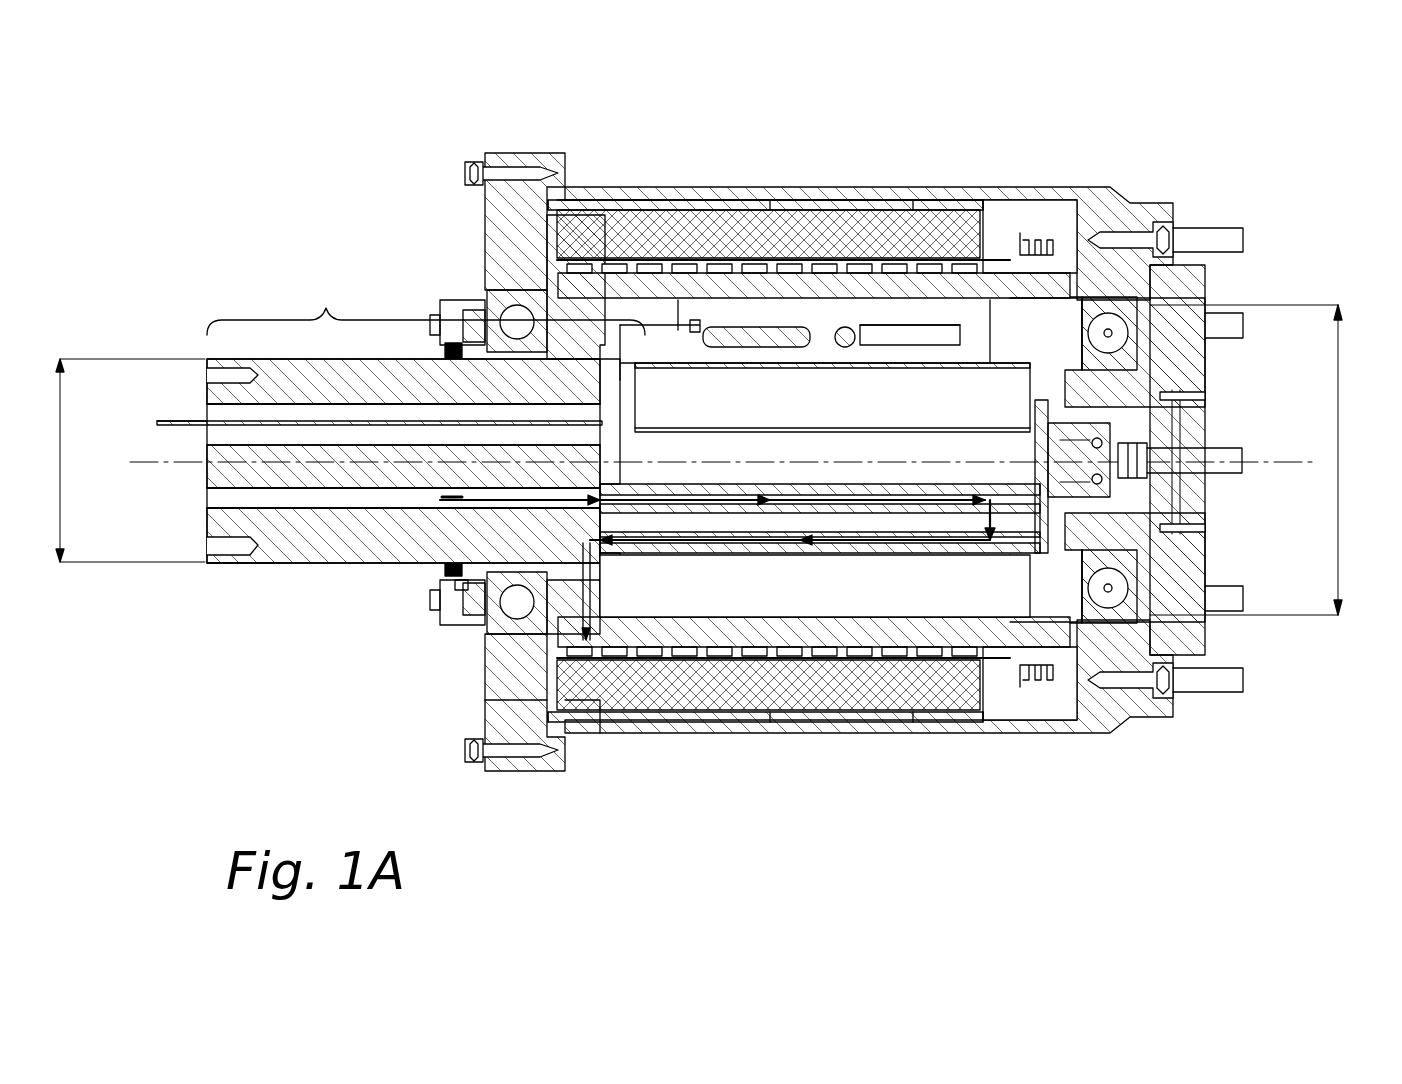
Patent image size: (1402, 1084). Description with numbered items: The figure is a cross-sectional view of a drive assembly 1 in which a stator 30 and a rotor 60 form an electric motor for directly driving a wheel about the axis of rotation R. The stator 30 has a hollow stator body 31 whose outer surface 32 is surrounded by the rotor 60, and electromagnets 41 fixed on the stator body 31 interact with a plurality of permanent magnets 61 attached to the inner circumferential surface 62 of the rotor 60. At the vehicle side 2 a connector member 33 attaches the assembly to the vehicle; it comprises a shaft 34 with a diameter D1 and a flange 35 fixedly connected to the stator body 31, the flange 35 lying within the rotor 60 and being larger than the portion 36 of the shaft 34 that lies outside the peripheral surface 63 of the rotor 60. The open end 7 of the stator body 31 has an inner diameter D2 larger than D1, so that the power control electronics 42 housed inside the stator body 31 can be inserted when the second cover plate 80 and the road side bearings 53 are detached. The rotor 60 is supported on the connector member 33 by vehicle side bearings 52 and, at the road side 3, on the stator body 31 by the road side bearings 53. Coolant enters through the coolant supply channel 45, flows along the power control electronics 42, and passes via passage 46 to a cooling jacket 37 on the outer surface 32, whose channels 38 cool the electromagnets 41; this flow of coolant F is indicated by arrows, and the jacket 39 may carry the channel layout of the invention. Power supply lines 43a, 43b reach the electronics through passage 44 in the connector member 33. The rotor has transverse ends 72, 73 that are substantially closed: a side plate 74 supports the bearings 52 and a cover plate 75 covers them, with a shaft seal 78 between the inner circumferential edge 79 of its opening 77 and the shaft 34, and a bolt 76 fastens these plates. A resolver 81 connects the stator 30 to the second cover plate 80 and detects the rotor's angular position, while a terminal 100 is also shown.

The drive assembly 1 is at (250, 275).
The vehicle side 2 is at (175, 408).
The road side 3 is at (1215, 405).
The open end 7 is at (1142, 600).
The stator 30 is at (605, 700).
The hollow stator body 31 is at (975, 630).
The outer surface 32 is at (858, 722).
The connector member 33 is at (295, 580).
The shaft 34 is at (272, 565).
The flange 35 is at (585, 338).
The portion of the shaft 36 is at (322, 312).
The cooling jacket 37 is at (835, 262).
The channels 38 is at (688, 655).
The jacket 39 is at (790, 612).
The electromagnets 41 is at (878, 225).
The power control electronics 42 is at (672, 385).
The power supply line 43a is at (780, 330).
The power supply line 43b is at (915, 385).
The passage 44 is at (280, 415).
The coolant supply channel 45 is at (215, 499).
The passage 46 is at (625, 690).
The vehicle side bearings 52 is at (515, 320).
The road side bearings 53 is at (1112, 333).
The rotor 60 is at (1135, 185).
The permanent magnets 61 is at (612, 205).
The inner circumferential surface 62 is at (670, 200).
The peripheral surface 63 is at (740, 200).
The transverse end 72 is at (432, 260).
The transverse end 73 is at (1180, 228).
The side plate 74 is at (500, 212).
The cover plate 75 is at (480, 712).
The flange bolt 76 is at (505, 640).
The opening 77 is at (472, 602).
The shaft seal 78 is at (447, 572).
The inner circumferential edge 79 is at (458, 590).
The second cover plate 80 is at (1205, 625).
The resolver 81 is at (1150, 470).
The terminal 100 is at (990, 298).
The axis of rotation R is at (1296, 462).
The flow of coolant F is at (940, 500).
The diameter D1 is at (112, 460).
The inner diameter D2 is at (1263, 460).